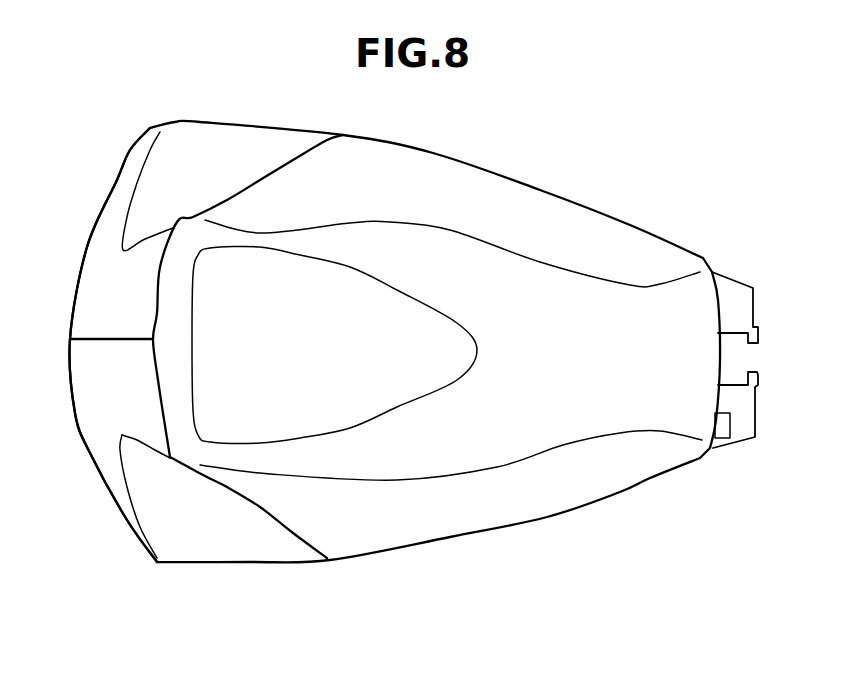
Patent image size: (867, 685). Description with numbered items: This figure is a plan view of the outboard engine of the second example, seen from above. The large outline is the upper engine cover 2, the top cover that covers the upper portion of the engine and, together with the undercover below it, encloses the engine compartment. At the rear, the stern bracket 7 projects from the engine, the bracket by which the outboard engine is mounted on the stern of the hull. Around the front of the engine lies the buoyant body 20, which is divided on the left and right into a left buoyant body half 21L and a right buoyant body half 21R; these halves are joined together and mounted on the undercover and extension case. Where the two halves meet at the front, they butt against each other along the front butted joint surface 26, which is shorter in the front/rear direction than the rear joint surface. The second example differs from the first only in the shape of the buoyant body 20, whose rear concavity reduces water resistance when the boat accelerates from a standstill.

The upper engine cover 2 is at (541, 493).
The stern bracket 7 is at (751, 310).
The buoyant body 20 is at (92, 461).
The left buoyant body half 21L is at (217, 140).
The right buoyant body half 21R is at (204, 545).
The front butted joint surface 26 is at (93, 337).